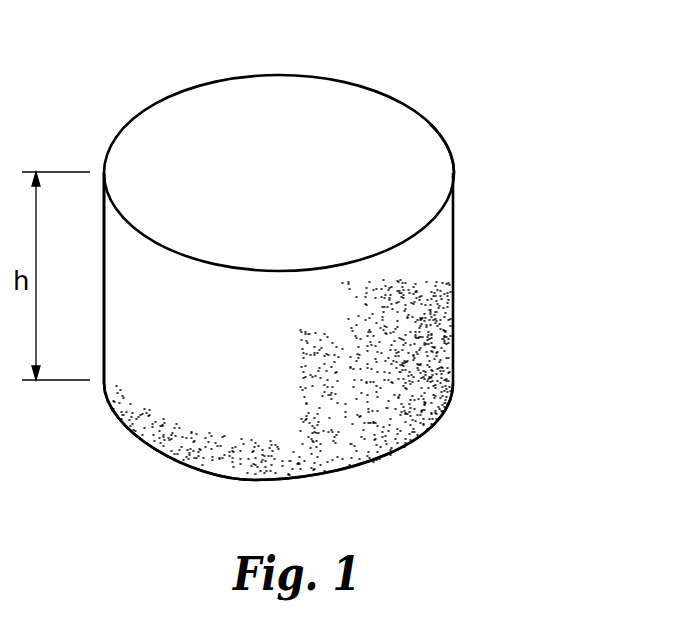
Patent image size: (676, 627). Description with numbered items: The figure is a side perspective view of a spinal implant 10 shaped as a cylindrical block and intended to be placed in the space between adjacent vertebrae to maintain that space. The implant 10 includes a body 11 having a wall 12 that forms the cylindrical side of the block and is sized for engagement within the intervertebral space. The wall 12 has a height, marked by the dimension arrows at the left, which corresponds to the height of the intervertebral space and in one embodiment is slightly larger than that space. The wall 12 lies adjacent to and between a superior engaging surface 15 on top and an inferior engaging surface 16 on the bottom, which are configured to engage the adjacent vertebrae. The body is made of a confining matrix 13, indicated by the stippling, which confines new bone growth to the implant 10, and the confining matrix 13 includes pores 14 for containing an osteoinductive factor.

The spinal implant 10 is at (336, 254).
The body 11 is at (454, 167).
The wall 12 is at (425, 305).
The confining matrix 13 is at (119, 250).
The pores 14 is at (130, 340).
The superior engaging surface 15 is at (177, 118).
The inferior engaging surface 16 is at (371, 478).